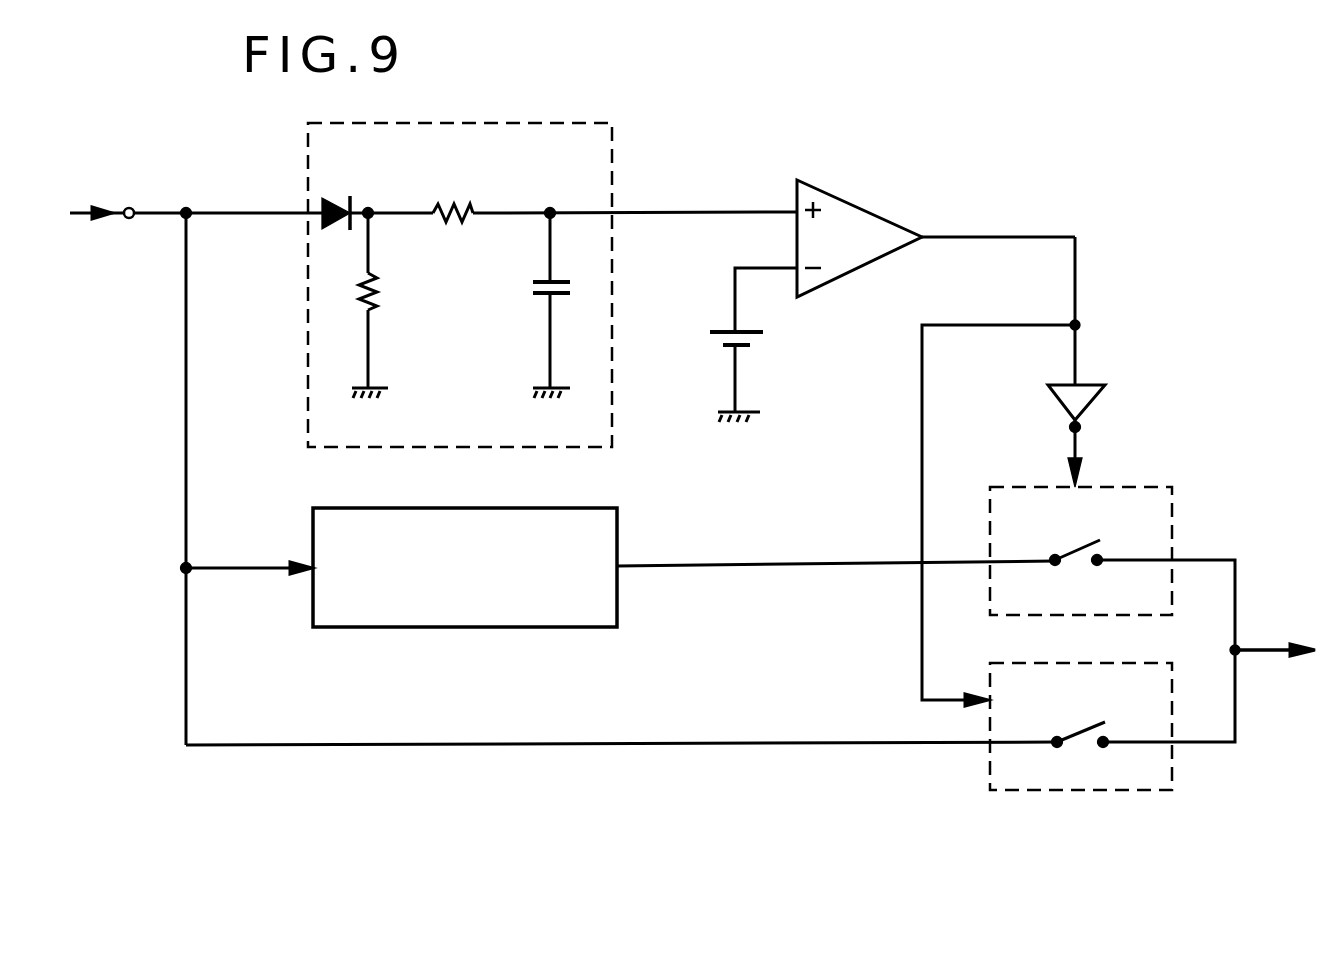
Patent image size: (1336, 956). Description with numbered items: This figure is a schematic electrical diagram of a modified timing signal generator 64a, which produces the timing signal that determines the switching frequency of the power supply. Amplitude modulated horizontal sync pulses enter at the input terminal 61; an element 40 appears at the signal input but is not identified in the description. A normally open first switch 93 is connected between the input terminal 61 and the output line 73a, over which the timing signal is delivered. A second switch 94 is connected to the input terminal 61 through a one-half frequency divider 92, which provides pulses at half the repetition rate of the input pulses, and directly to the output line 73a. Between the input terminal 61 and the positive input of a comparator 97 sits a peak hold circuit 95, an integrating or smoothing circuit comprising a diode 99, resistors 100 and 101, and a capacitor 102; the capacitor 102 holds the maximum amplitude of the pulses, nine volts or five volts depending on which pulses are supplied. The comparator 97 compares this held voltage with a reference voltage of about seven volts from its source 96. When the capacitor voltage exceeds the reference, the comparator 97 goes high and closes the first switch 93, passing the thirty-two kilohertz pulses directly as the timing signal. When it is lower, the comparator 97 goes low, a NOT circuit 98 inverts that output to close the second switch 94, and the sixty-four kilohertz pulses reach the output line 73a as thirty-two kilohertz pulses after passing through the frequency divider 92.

The input terminal 40 is at (129, 207).
The input terminal 61 is at (134, 210).
The modified timing signal generator 64a is at (1150, 200).
The ½ frequency divider 92 is at (464, 628).
The first switch 93 is at (1172, 765).
The second switch 94 is at (1135, 486).
The peak hold circuit 95 is at (612, 190).
The reference voltage source 96 is at (728, 328).
The comparator 97 is at (855, 205).
The NOT circuit 98 is at (1100, 396).
The diode 99 is at (352, 207).
The resistor 100 is at (453, 202).
The resistor 101 is at (380, 302).
The capacitor 102 is at (540, 298).
The output line 73a is at (1265, 647).